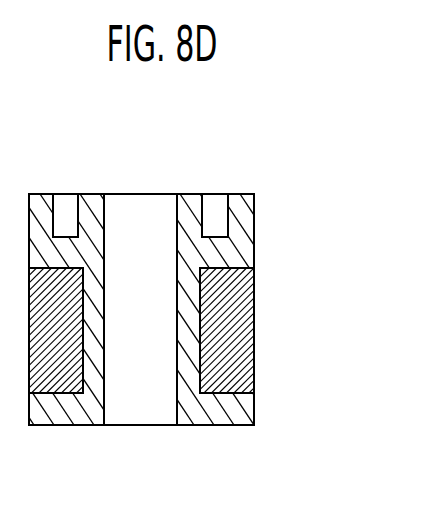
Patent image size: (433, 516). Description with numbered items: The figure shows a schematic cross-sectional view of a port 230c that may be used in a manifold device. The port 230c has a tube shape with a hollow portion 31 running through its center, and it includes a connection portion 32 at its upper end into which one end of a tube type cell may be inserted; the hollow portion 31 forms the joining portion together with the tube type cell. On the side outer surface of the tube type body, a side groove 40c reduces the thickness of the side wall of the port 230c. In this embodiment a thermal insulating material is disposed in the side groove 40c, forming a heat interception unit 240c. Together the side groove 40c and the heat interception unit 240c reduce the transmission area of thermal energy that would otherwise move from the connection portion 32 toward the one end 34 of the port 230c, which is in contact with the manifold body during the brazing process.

The port 230c is at (197, 301).
The hollow portion 31 is at (147, 202).
The connection portion 32 is at (216, 202).
The one end of the port 34 is at (190, 426).
The side groove 40c is at (233, 268).
The heat interception unit 240c is at (233, 348).